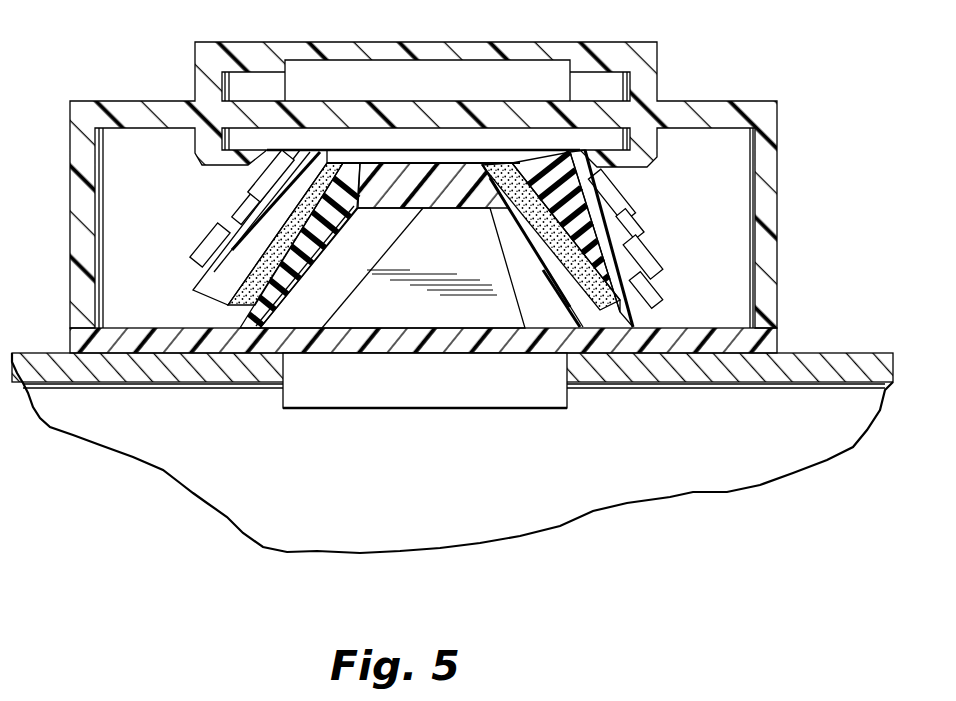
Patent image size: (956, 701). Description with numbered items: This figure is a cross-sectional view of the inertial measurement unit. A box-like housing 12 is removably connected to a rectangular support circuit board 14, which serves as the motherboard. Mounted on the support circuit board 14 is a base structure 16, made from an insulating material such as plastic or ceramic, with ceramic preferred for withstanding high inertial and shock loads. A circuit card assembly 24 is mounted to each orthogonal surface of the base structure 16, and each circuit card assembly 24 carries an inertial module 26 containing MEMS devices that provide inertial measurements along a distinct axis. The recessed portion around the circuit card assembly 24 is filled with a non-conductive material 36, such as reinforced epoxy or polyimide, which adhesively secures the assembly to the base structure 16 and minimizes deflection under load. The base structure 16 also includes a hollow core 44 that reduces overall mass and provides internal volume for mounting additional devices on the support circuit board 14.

The housing 12 is at (787, 215).
The support circuit board 14 is at (773, 345).
The base structure 16 is at (260, 298).
The circuit card assembly 24 is at (637, 287).
The inertial module 26 is at (228, 227).
The non-conductive material 36 is at (567, 240).
The hollow core 44 is at (433, 300).